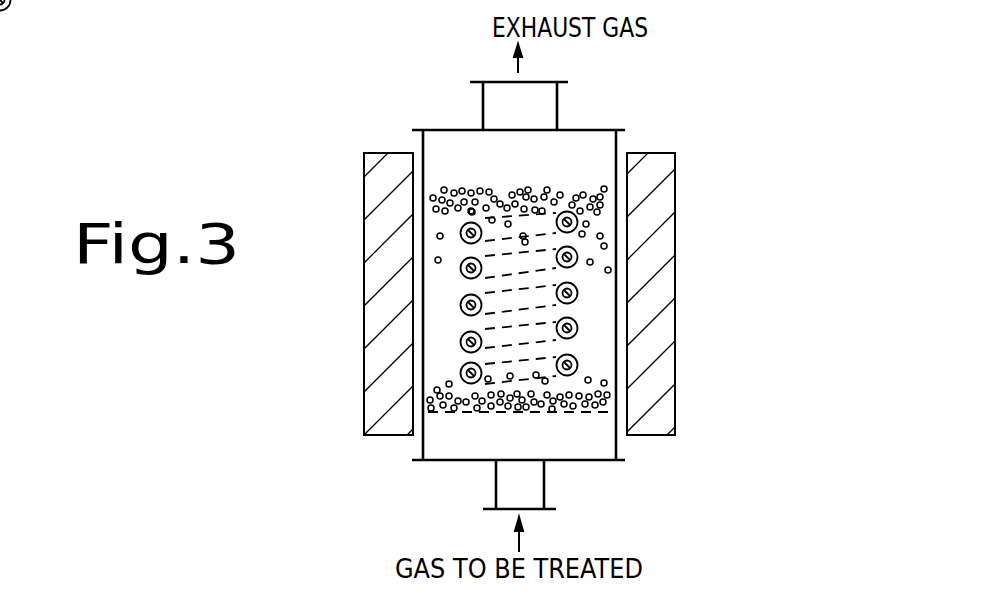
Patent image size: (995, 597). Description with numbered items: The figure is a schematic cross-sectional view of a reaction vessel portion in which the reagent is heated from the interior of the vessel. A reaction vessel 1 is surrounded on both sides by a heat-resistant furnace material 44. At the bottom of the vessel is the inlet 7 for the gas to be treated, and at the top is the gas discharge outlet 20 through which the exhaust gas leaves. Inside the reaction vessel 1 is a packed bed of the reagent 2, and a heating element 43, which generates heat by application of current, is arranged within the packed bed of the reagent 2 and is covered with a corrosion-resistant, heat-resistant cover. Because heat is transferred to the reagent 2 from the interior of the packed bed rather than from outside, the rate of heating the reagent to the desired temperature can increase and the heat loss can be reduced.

The reaction vessel 1 is at (580, 138).
The reagent 2 is at (485, 190).
The inlet for a gas to be treated 7 is at (533, 511).
The gas discharge outlet 20 is at (537, 82).
The heating element 43 is at (577, 293).
The heat-resistant furnace material 44 is at (375, 322).